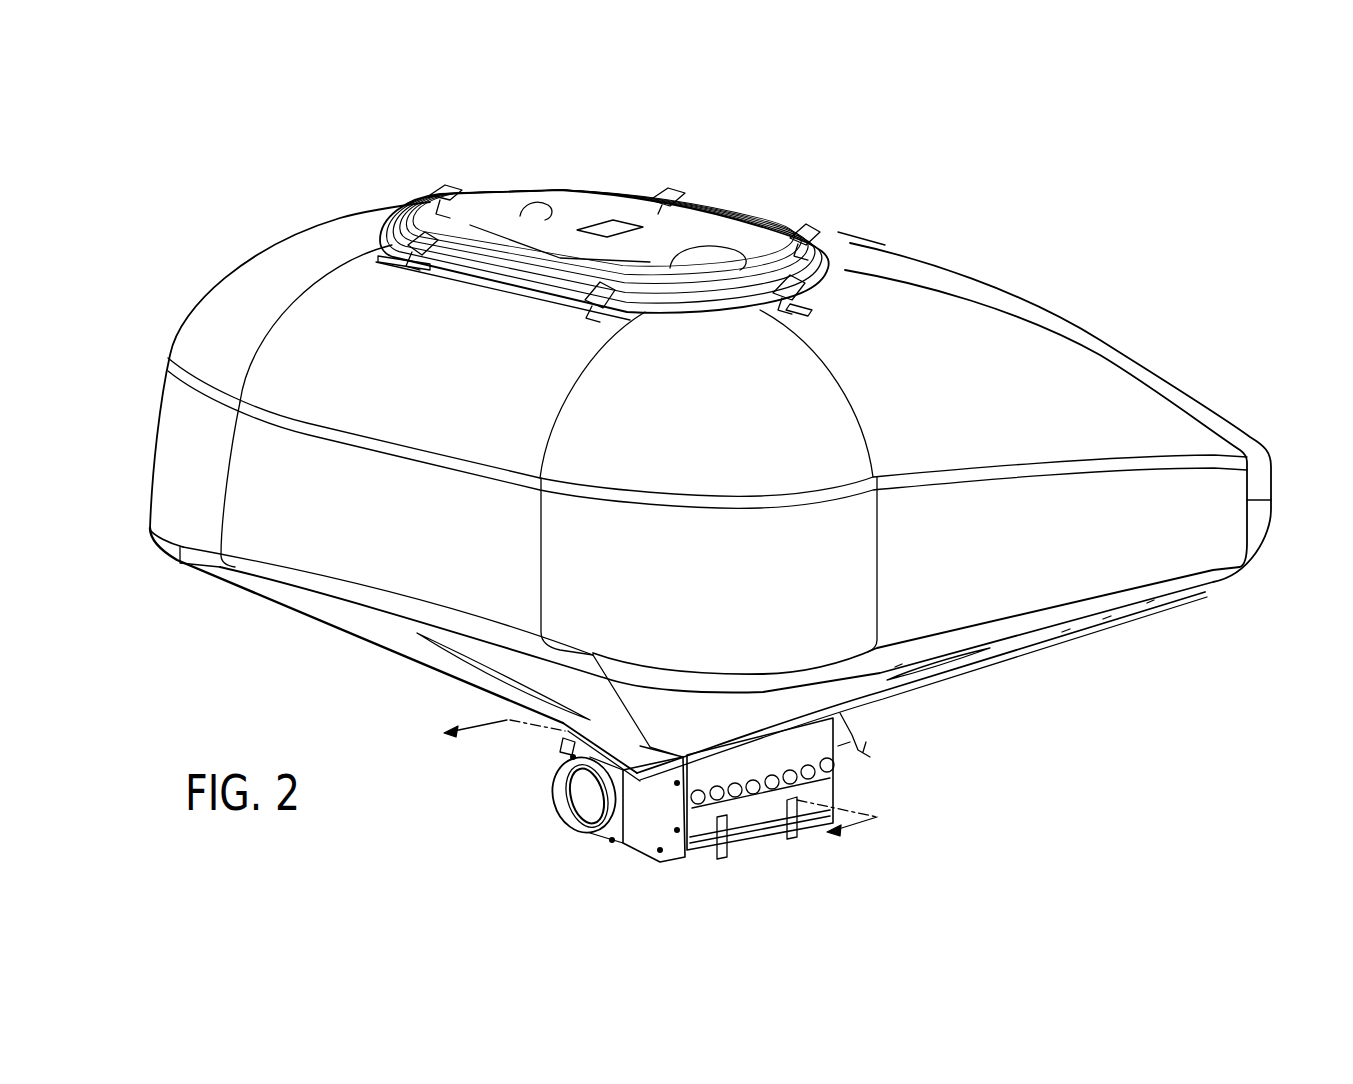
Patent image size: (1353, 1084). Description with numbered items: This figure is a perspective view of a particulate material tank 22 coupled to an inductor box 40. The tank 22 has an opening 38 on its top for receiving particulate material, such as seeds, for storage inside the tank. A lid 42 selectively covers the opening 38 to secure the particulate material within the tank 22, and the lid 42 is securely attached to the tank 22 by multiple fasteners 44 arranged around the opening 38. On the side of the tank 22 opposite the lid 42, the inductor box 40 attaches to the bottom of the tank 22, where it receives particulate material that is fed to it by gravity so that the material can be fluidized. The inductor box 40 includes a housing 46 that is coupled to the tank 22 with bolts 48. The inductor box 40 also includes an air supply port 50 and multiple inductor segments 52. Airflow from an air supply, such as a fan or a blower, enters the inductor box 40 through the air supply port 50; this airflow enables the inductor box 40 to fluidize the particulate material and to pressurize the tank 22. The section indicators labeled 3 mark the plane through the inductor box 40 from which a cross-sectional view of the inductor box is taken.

The particulate material tank 22 is at (1000, 243).
The opening 38 is at (693, 312).
The lid 42 is at (563, 213).
The fasteners 44 is at (443, 190).
The inductor box 40 is at (694, 827).
The housing 46 is at (643, 837).
The bolts 48 is at (663, 775).
The air supply port 50 is at (558, 803).
The inductor segments 52 is at (743, 805).
The section line 3- 3 is at (656, 794).